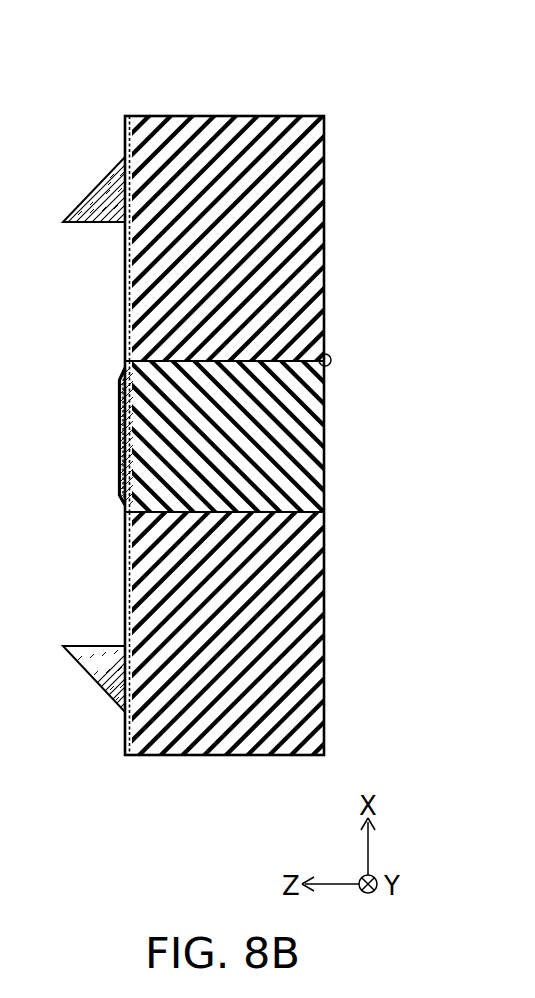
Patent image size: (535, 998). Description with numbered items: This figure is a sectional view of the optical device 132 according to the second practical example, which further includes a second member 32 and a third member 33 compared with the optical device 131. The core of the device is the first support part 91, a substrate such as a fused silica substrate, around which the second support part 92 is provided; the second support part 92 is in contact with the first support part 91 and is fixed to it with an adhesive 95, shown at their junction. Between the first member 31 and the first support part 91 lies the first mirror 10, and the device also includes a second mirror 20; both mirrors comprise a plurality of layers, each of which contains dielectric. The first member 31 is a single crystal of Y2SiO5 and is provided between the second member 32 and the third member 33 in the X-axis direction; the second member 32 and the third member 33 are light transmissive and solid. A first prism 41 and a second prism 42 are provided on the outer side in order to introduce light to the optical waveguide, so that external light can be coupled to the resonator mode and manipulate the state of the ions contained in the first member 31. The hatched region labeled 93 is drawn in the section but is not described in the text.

The first mirror 10 is at (100, 437).
The second mirror 20 is at (118, 456).
The first member 31 is at (125, 440).
The second member 32 is at (125, 133).
The third member 33 is at (126, 731).
The first prism 41 is at (104, 200).
The second prism 42 is at (101, 670).
The first support part 91 is at (295, 426).
The second support part 92 is at (223, 150).
The substrate 93 is at (267, 499).
The adhesive 95 is at (331, 360).
The optical device 131 is at (341, 489).
The optical device 132 is at (323, 86).